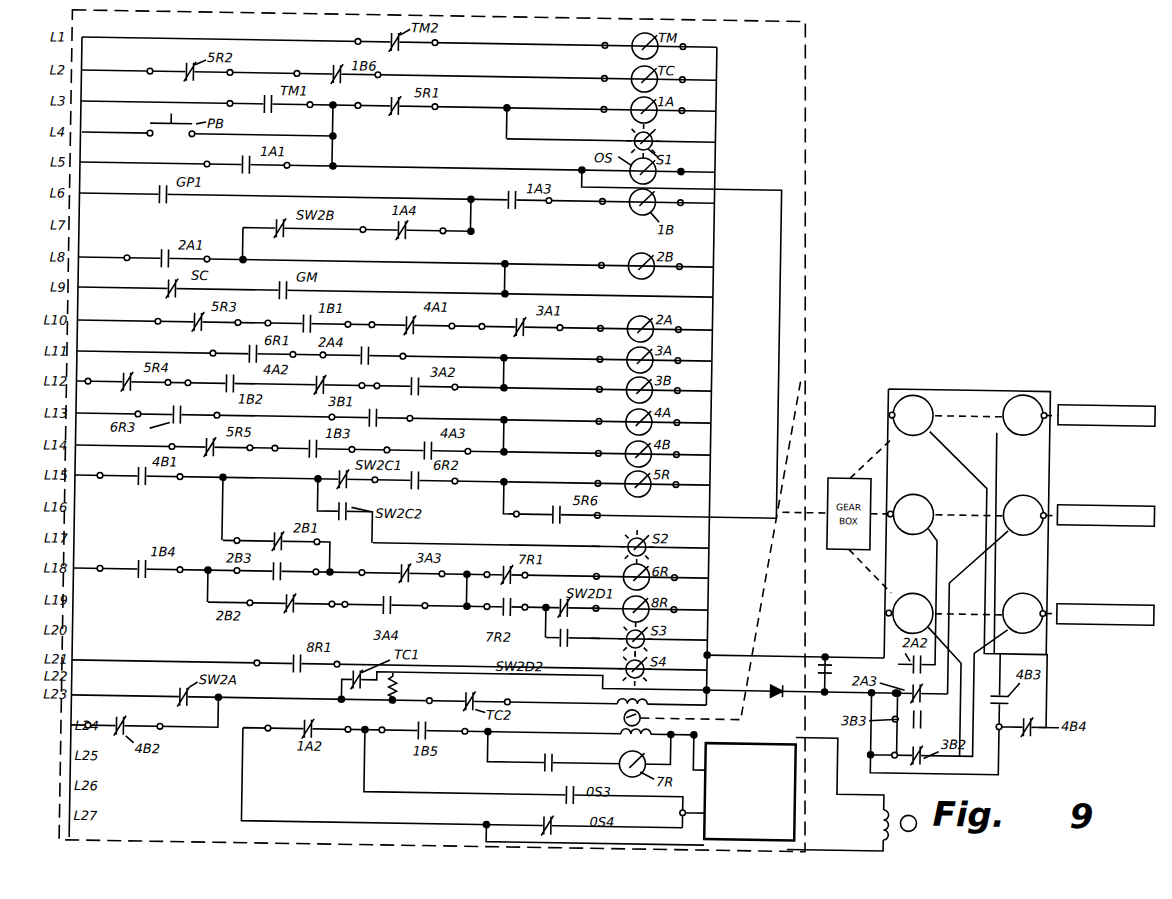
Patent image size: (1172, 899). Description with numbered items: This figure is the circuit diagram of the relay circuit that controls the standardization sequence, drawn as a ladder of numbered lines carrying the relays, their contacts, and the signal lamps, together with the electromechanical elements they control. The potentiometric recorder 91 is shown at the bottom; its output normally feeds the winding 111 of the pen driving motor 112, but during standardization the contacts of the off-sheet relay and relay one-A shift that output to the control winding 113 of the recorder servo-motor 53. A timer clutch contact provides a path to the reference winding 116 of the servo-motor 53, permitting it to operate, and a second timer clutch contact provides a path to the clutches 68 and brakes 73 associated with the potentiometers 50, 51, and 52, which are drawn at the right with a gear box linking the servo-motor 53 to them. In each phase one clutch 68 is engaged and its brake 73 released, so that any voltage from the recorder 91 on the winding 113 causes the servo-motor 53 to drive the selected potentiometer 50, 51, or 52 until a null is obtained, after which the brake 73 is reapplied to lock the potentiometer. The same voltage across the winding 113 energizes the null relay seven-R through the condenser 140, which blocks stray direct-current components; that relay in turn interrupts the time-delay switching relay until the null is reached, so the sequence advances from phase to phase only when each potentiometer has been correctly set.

The potentiometer 50 is at (1101, 489).
The potentiometer 51 is at (1102, 588).
The potentiometer 52 is at (1100, 389).
The recorder servo-motor 53 is at (635, 709).
The clutch 68 is at (919, 537).
The brake 73 is at (1029, 540).
The potentiometric recorder 91 is at (818, 821).
The winding of pen driving motor 111 is at (903, 828).
The pen driving motor 112 is at (929, 813).
The control winding 113 is at (636, 735).
The reference winding 116 is at (625, 690).
The condenser 140 is at (552, 762).